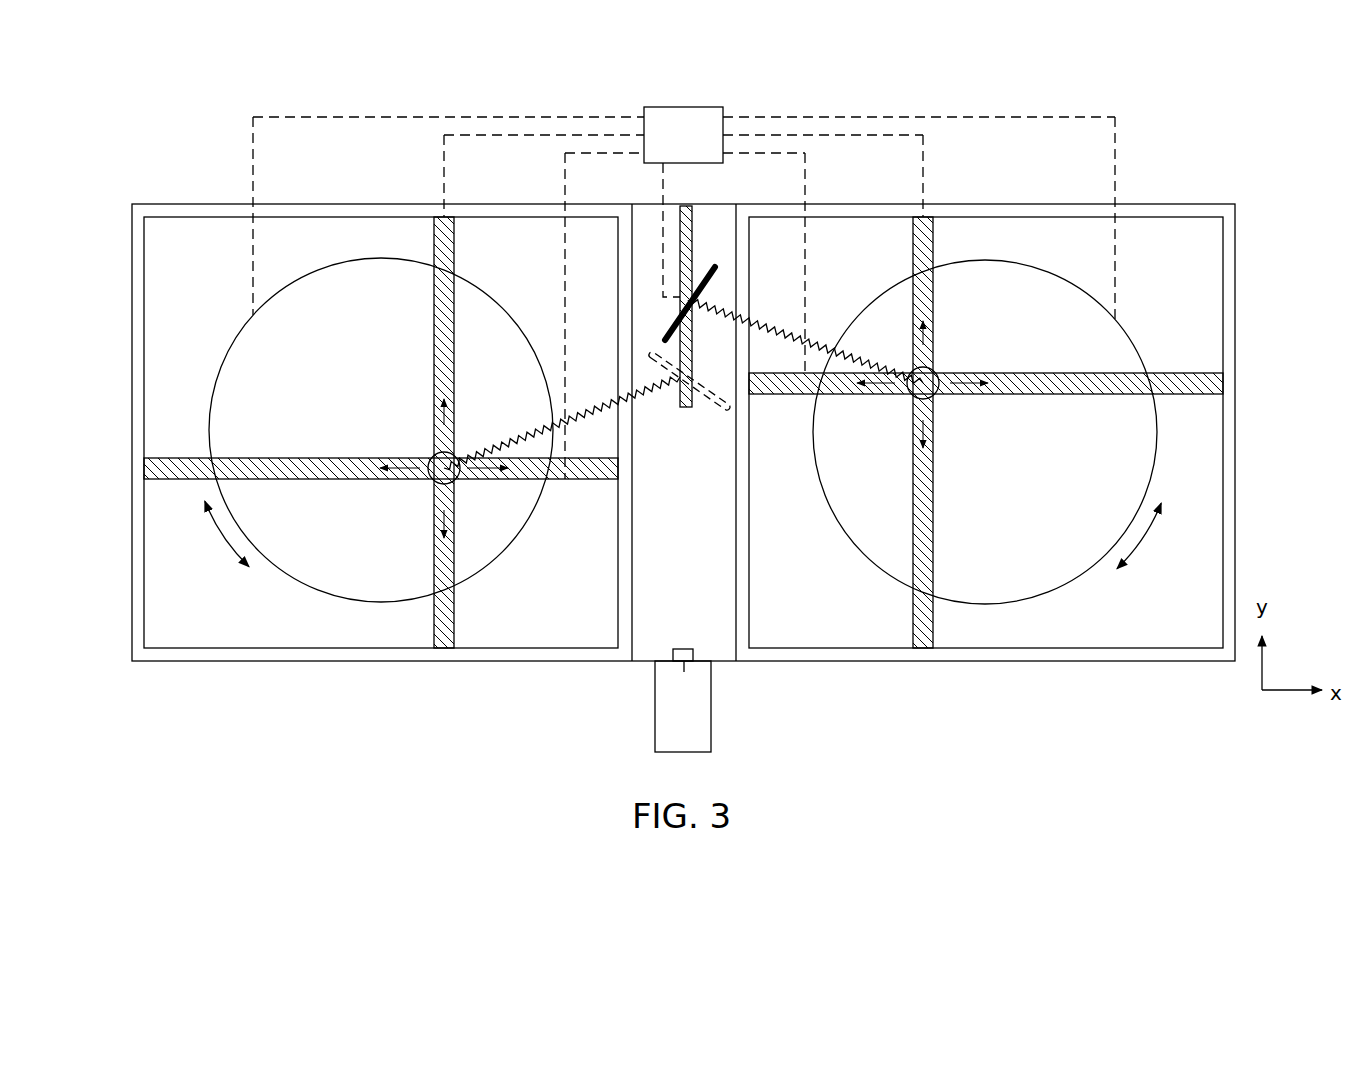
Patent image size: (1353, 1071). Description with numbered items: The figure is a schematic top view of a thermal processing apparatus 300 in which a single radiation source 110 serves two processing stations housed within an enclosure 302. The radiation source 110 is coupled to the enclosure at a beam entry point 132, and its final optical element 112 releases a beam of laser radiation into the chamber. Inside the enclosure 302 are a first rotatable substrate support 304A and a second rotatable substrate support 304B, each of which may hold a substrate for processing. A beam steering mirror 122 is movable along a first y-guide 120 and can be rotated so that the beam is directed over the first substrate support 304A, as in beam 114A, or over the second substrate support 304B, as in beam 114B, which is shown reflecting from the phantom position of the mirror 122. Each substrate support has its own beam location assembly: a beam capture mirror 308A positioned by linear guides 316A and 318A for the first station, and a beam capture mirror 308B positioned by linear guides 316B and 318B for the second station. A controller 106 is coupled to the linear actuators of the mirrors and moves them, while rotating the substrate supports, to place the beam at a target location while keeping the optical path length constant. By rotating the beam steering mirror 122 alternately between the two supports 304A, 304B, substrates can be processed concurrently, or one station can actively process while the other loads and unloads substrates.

The controller 106 is at (664, 107).
The radiation source 110 is at (711, 710).
The optical element 112 is at (693, 653).
The beam 114A is at (810, 325).
The beam 114B is at (497, 435).
The first y-guide 120 is at (694, 232).
The beam steering mirror 122 is at (712, 288).
The beam entry point 132 is at (684, 673).
The thermal processing apparatus 300 is at (735, 396).
The enclosure 302 is at (1237, 262).
The first rotatable substrate support 304A is at (1125, 328).
The second rotatable substrate support 304B is at (480, 288).
The beam capture mirror 308A is at (932, 372).
The beam capture mirror 308B is at (432, 480).
The linear guide 316A is at (1027, 395).
The linear guide 316B is at (306, 457).
The linear guide 318A is at (935, 248).
The linear guide 318B is at (455, 248).